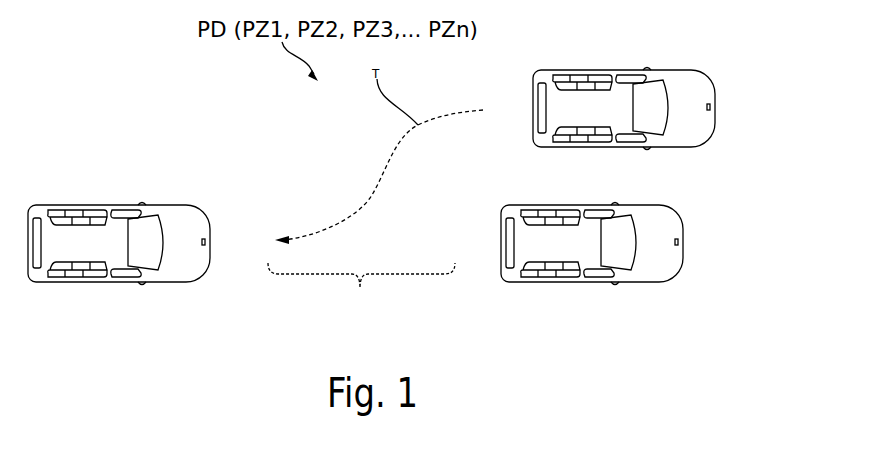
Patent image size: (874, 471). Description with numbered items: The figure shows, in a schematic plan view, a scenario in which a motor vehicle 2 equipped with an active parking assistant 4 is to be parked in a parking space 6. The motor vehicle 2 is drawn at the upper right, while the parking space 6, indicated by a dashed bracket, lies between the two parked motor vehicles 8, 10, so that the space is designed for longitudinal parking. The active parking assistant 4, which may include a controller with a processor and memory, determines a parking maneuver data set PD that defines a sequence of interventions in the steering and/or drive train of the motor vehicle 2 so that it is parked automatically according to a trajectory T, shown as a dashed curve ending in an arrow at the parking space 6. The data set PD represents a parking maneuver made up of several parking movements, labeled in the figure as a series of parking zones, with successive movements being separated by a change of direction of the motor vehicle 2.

The motor vehicle 2 is at (693, 71).
The active parking assistant 4 is at (632, 81).
The parking space 6 is at (360, 288).
The parked motor vehicle 8 is at (193, 204).
The parked motor vehicle 10 is at (665, 205).